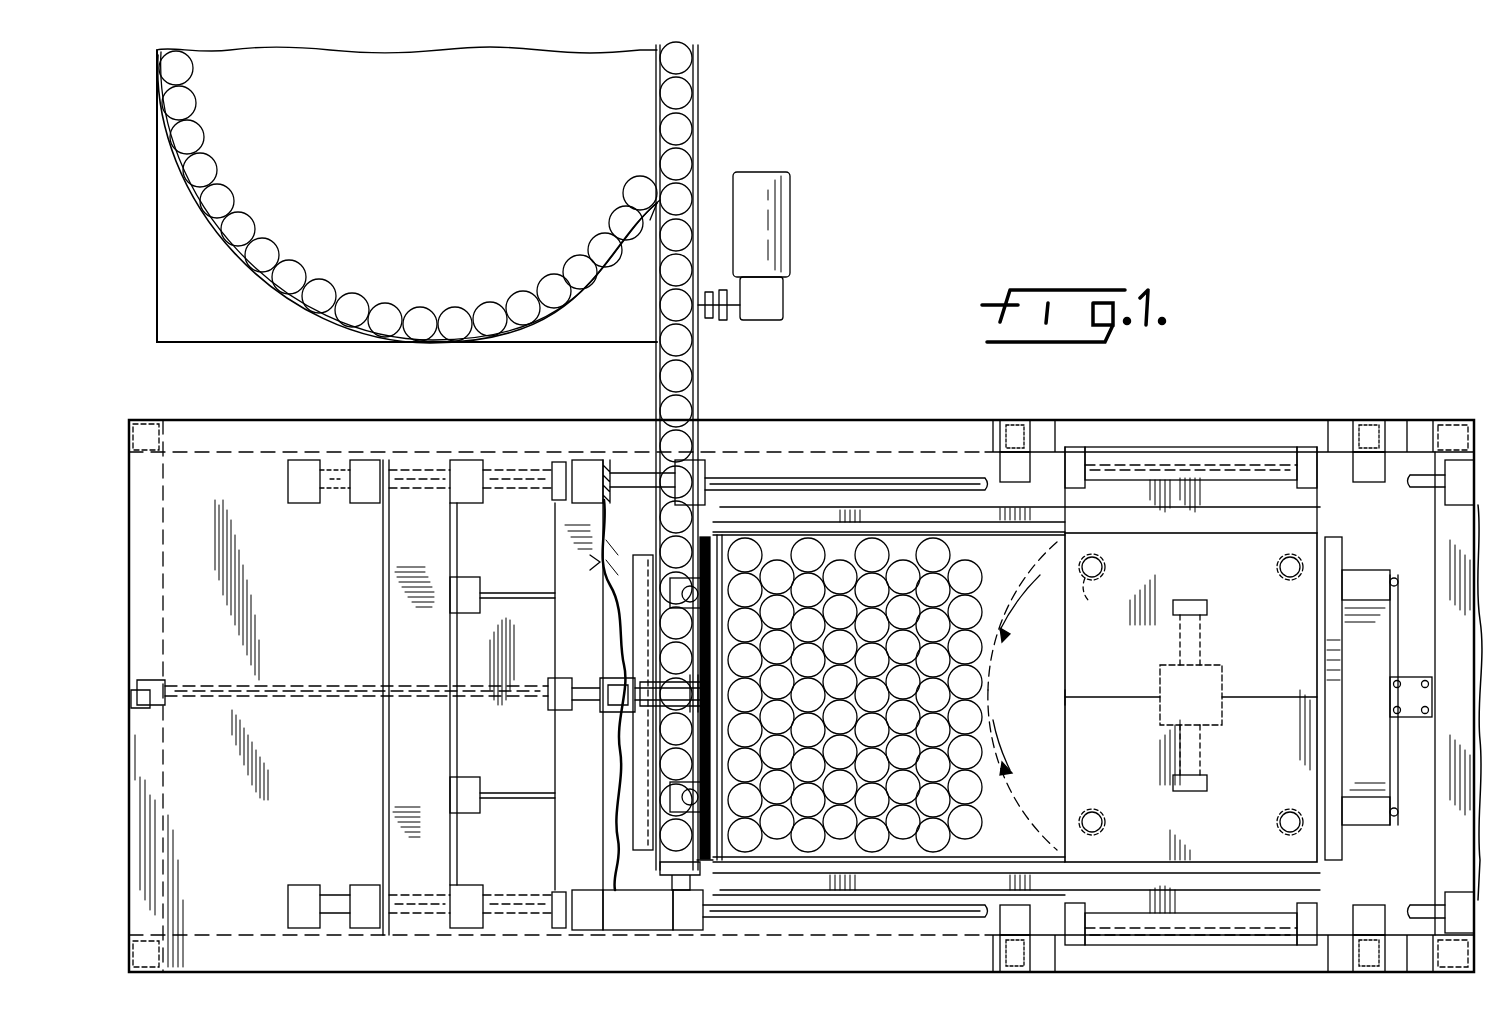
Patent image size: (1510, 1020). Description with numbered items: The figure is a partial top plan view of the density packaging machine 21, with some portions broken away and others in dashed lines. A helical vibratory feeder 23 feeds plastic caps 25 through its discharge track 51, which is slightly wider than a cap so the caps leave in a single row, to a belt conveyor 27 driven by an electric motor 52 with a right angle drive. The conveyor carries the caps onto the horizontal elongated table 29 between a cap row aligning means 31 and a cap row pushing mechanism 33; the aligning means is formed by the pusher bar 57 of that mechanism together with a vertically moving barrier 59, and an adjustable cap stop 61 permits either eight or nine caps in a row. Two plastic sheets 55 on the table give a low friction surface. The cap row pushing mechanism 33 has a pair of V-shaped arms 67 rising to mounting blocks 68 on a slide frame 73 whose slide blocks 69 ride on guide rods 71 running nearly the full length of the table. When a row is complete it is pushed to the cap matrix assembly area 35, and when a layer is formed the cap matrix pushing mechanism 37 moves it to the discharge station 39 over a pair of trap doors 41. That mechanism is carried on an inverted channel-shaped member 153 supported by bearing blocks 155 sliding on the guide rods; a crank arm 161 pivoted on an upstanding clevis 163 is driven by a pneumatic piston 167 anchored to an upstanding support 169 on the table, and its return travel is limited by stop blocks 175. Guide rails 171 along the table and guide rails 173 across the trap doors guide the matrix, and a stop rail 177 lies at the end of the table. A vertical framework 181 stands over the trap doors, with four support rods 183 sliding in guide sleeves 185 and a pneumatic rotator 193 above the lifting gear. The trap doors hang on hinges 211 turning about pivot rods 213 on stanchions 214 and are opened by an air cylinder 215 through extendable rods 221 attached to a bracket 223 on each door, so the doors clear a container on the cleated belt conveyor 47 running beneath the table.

The density packaging machine 21 is at (752, 405).
The helical vibratory feeder 23 is at (408, 195).
The plastic caps 25 is at (715, 124).
The belt conveyor 27 is at (698, 368).
The horizontal elongated table 29 is at (917, 420).
The cap row aligning means 31 is at (708, 875).
The cap row pushing mechanism 33 is at (648, 845).
The cap matrix assembly area 35 is at (1012, 668).
The cap matrix pushing mechanism 37 is at (720, 525).
The discharge station 39 is at (1118, 768).
The trap doors 41 is at (1075, 712).
The cleated belt conveyor 47 is at (1473, 800).
The discharge track 51 is at (655, 258).
The electric motor 52 is at (790, 248).
The plastic sheets 55 is at (565, 822).
The pusher bar 57 is at (623, 695).
The vertically moving barrier 59 is at (703, 545).
The adjustable cap stop 61 is at (668, 878).
The V-shaped arms 67 is at (530, 798).
The mounting blocks 68 is at (470, 778).
The slide blocks 69 is at (460, 900).
The guide rods 71 is at (902, 918).
The slide frame 73 is at (383, 770).
The inverted channel-shaped member 153 is at (598, 575).
The bearing blocks 155 is at (695, 930).
The crank arm 161 is at (640, 715).
The upstanding clevis 163 is at (640, 680).
The pneumatic piston 167 is at (312, 683).
The upstanding support 169 is at (150, 690).
The guide rails 171 is at (990, 845).
The guide rails 173 is at (1255, 820).
The stop blocks 175 is at (556, 895).
The stop rail 177 is at (1345, 735).
The vertical framework 181 is at (1353, 955).
The support rods 183 is at (1302, 800).
The guide sleeves 185 is at (1105, 597).
The pneumatic rotator 193 is at (1162, 722).
The hinges 211 is at (1312, 912).
The pivot rods 213 is at (1250, 930).
The stanchions 214 is at (1380, 905).
The air cylinder 215 is at (1412, 676).
The extendable rods 221 is at (1396, 735).
The bracket 223 is at (1358, 820).